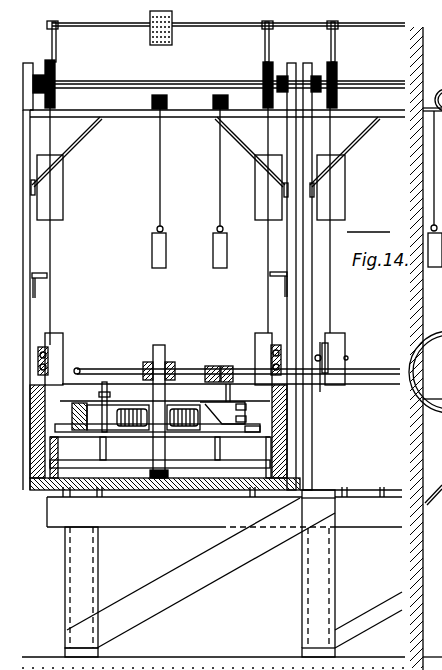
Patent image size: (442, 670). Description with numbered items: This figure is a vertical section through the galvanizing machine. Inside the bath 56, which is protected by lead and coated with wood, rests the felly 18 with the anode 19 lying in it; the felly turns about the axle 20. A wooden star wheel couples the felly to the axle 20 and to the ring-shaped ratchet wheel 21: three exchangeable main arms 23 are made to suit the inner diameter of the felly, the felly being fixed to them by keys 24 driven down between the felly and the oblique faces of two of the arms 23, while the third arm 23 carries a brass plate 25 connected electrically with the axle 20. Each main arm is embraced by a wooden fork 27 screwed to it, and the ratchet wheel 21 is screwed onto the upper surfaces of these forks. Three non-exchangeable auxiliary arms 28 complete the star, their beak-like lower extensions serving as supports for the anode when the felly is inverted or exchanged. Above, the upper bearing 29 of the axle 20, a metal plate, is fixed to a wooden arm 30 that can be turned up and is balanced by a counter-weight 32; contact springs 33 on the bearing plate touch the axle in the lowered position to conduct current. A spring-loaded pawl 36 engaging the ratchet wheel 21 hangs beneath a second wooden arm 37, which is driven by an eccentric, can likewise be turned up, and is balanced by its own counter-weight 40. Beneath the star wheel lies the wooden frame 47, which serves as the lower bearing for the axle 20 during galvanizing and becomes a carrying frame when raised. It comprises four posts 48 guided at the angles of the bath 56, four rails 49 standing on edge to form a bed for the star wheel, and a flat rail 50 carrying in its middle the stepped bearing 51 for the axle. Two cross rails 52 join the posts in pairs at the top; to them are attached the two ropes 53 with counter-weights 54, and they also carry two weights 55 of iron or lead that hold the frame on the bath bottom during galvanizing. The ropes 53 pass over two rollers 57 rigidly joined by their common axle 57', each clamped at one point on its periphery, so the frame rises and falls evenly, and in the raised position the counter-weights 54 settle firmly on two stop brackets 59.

The felly 18 is at (243, 403).
The anode 19 is at (245, 418).
The axle 20 is at (190, 378).
The ratchet wheel 21 is at (105, 382).
The arm 23 is at (214, 518).
The key 24 is at (80, 402).
The brass plate 25 is at (88, 418).
The wooden fork 27 is at (108, 386).
The auxiliary arm 28 is at (245, 432).
The upper bearing 29 is at (170, 366).
The wooden arm 30 is at (170, 376).
The counter-weight 32 is at (153, 253).
The contact springs 33 is at (158, 347).
The pawl 36 is at (227, 364).
The second wooden arm 37 is at (232, 366).
The counter-weight 40 is at (216, 262).
The wooden frame 47 is at (132, 483).
The post 48 is at (260, 340).
The rail 49 is at (106, 447).
The rail 50 is at (197, 573).
The stepped bearing 51 is at (165, 463).
The cross rail 52 is at (47, 353).
The rope 53 is at (50, 312).
The counter-weight 54 is at (60, 193).
The weight 55 is at (45, 362).
The bath 56 is at (33, 481).
The roller 57 is at (179, 70).
The common axle 57' is at (228, 70).
The stop bracket 59 is at (47, 275).